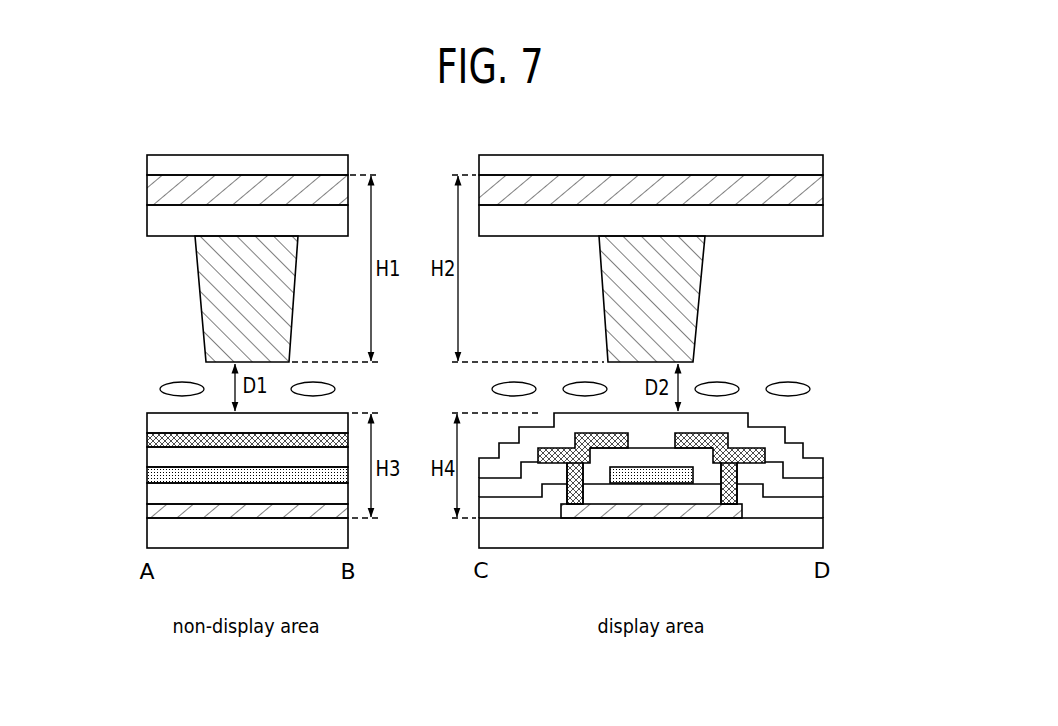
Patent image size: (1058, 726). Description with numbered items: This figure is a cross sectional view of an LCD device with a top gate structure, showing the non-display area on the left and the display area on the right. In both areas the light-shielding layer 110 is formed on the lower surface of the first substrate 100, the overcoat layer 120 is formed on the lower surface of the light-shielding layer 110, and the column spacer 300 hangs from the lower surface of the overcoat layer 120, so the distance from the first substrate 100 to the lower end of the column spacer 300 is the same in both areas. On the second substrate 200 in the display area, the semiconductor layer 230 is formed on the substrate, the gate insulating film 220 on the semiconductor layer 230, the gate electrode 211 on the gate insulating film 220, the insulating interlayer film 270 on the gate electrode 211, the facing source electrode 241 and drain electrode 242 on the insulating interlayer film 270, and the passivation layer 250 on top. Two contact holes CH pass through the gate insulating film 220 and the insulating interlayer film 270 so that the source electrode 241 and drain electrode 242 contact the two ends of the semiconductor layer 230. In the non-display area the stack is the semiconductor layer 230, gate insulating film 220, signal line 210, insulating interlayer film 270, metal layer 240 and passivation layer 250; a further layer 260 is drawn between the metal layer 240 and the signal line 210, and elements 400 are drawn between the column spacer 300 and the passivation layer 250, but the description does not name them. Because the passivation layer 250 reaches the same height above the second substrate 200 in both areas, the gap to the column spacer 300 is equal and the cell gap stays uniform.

The first substrate 100 is at (150, 167).
The light-shielding layer 110 is at (152, 191).
The overcoat layer 120 is at (150, 221).
The column spacer 300 is at (203, 270).
The liquid crystal / filler particles 400 is at (169, 377).
The second substrate 200 is at (147, 540).
The semiconductor layer 230 is at (152, 512).
The gate insulating film 220 is at (152, 492).
The signal line 210 is at (152, 475).
The gate electrode 211 is at (638, 478).
The interlayer insulating layer 260 is at (152, 458).
The metal layer 240 is at (152, 440).
The source electrode 241 is at (576, 505).
The drain electrode 242 is at (729, 505).
The insulating interlayer film 270 is at (815, 489).
The passivation layer 250 is at (152, 418).
The contact hole CH is at (563, 494).